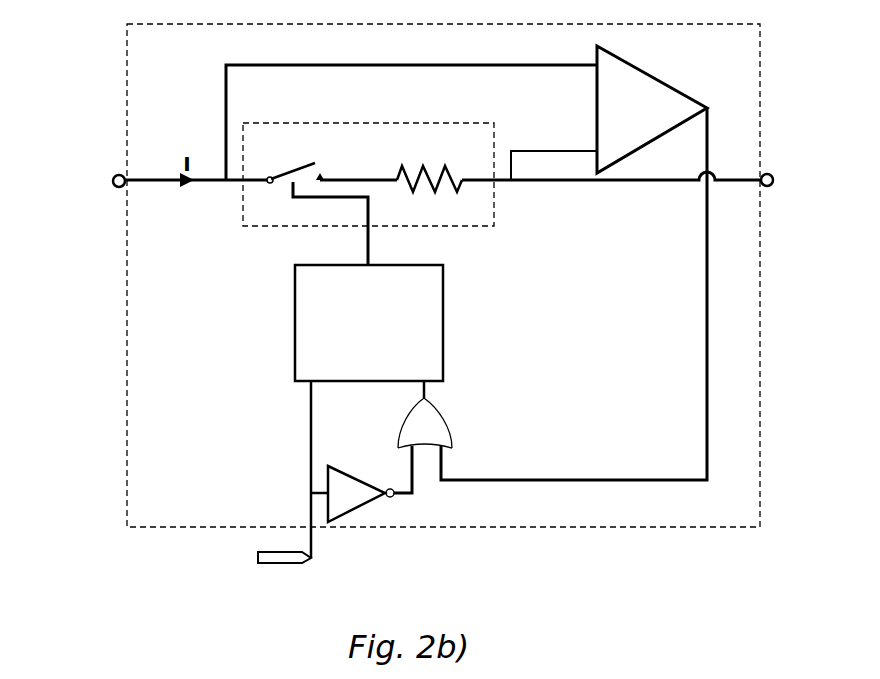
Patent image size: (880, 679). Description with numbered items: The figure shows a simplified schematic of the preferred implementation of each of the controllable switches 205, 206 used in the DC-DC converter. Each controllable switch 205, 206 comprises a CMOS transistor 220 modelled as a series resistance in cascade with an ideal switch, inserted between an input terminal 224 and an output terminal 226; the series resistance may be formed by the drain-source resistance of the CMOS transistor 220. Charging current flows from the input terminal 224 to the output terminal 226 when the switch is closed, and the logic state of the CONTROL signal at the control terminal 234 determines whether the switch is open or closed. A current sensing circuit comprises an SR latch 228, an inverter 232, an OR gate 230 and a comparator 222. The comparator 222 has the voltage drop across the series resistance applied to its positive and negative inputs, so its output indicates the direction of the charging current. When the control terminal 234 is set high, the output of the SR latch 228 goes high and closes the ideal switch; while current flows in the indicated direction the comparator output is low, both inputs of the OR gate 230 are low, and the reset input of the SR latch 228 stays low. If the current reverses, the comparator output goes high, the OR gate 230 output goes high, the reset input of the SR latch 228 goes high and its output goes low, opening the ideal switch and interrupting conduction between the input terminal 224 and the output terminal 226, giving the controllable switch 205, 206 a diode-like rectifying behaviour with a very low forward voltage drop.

The controllable switch 205 is at (392, 301).
The controllable switch 206 is at (152, 532).
The CMOS transistor 220 is at (494, 227).
The comparator 222 is at (660, 75).
The input terminal 224 is at (120, 187).
The output terminal 226 is at (770, 168).
The SR latch 228 is at (447, 323).
The OR gate 230 is at (453, 432).
The inverter 232 is at (353, 517).
The control terminal 234 is at (273, 568).